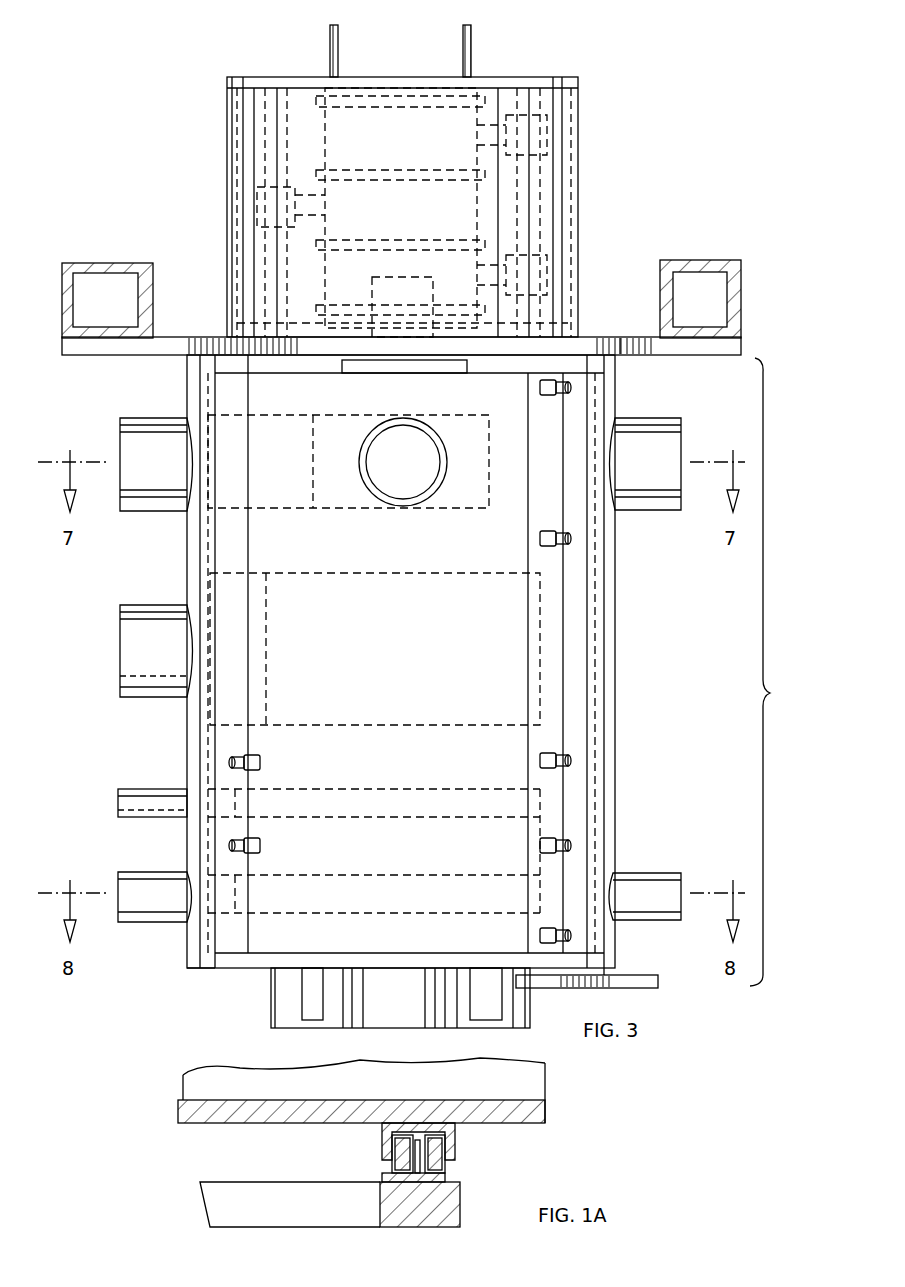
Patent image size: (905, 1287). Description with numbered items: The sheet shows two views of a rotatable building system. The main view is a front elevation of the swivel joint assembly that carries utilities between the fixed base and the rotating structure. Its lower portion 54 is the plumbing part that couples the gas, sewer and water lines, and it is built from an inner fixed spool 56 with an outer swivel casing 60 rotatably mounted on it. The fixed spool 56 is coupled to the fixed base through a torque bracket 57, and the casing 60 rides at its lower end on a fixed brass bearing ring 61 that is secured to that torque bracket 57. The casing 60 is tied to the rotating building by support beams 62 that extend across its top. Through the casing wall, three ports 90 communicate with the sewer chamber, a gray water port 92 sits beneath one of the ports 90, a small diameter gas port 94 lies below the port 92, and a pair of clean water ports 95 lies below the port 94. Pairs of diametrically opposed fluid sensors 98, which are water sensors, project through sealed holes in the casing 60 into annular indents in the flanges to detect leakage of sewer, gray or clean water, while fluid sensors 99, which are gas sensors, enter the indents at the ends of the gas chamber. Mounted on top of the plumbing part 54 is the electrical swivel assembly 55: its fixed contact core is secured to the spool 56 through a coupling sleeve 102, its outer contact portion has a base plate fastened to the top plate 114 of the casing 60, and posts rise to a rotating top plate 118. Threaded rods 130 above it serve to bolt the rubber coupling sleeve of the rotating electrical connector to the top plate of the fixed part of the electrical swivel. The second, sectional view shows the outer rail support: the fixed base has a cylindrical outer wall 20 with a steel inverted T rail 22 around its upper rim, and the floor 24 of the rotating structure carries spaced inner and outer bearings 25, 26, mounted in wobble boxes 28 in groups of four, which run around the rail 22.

In FIG. 3, the threaded rods 130 is at (463, 38).
In FIG. 3, the coupling sleeve 102 is at (402, 207).
In FIG. 3, the electrical swivel assembly 55 is at (592, 126).
In FIG. 3, the support beams 62 is at (110, 262).
In FIG. 3, the top plate 114 is at (605, 367).
In FIG. 3, the top plate 118 is at (633, 338).
In FIG. 3, the outer swivel casing 60 is at (590, 620).
In FIG. 3, the ports 90 is at (157, 435).
In FIG. 3, the gray water port 92 is at (135, 670).
In FIG. 3, the gas port 94 is at (157, 800).
In FIG. 3, the clean water ports 95 is at (158, 918).
In FIG. 3, the fluid sensors 98 is at (540, 386).
In FIG. 3, the fluid sensors 99 is at (262, 840).
In FIG. 3, the inner fixed spool 56 is at (271, 993).
In FIG. 3, the torque bracket 57 is at (640, 980).
In FIG. 3, the brass bearing ring 61 is at (195, 965).
In FIG. 3, the lower portion 54 is at (774, 672).
In FIG. 1A, the floor 24 is at (520, 1112).
In FIG. 1A, the wobble boxes 28 is at (382, 1127).
In FIG. 1A, the inner bearings 25 is at (400, 1148).
In FIG. 1A, the outer bearings 26 is at (435, 1145).
In FIG. 1A, the inverted T rail 22 is at (445, 1177).
In FIG. 1A, the cylindrical outer wall 20 is at (447, 1207).